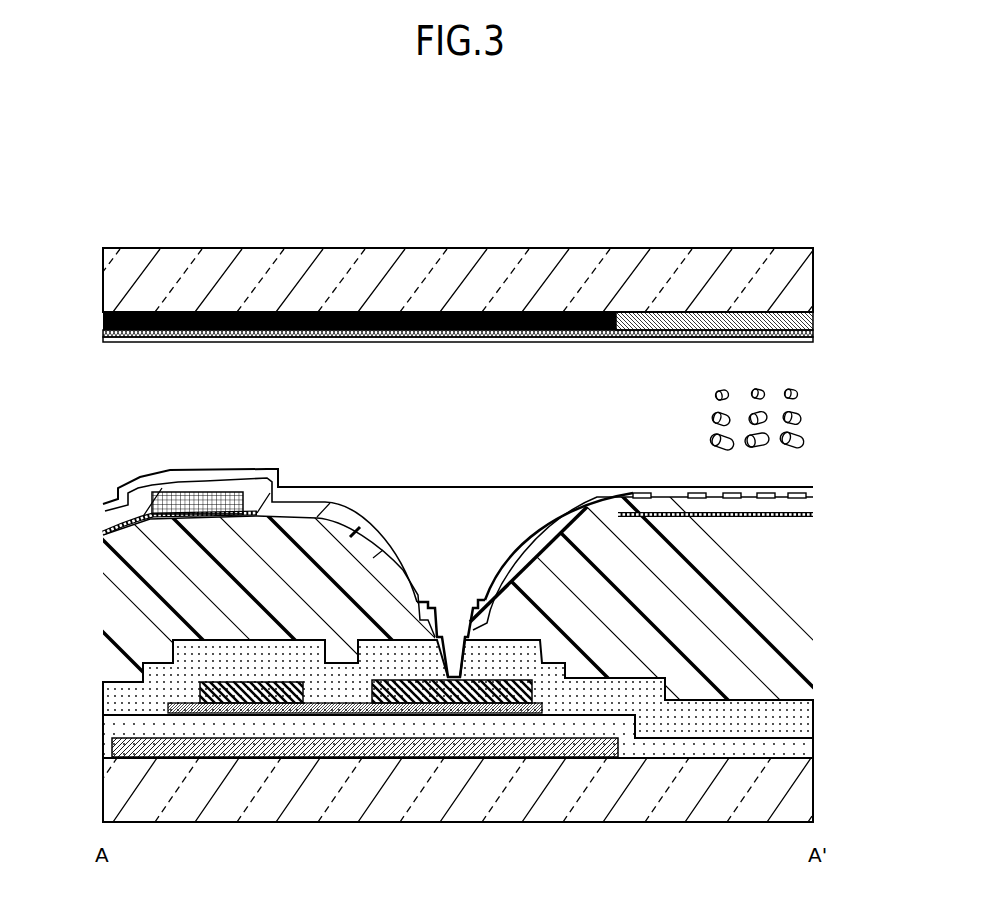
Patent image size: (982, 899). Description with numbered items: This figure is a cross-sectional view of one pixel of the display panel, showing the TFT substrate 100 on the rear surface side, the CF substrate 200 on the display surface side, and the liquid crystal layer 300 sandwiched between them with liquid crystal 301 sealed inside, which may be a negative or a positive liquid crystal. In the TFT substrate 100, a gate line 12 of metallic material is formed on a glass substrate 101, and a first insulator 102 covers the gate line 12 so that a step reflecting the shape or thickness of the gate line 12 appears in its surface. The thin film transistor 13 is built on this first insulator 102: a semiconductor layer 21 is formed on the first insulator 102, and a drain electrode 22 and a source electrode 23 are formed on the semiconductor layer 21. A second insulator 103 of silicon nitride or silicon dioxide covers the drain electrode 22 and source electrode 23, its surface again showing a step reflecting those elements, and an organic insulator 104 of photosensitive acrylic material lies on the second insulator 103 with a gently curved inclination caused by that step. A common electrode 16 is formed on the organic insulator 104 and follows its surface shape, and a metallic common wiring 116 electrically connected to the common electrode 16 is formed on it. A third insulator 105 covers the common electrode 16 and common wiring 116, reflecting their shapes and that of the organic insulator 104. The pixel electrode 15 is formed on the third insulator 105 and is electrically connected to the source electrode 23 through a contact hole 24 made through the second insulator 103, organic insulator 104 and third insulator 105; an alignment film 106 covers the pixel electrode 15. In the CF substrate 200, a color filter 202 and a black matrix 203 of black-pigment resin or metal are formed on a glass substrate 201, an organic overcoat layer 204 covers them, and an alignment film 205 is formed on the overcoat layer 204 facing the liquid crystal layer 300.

The TFT substrate 100 is at (93, 485).
The CF substrate 200 is at (93, 262).
The liquid crystal layer 300 is at (93, 353).
The liquid crystal 301 is at (813, 428).
The glass substrate 201 is at (810, 267).
The color filter 202 is at (673, 318).
The black matrix 203 is at (560, 312).
The overcoat layer 204 is at (812, 328).
The alignment film 205 is at (810, 341).
The glass substrate 101 is at (810, 790).
The first insulator 102 is at (810, 747).
The second insulator 103 is at (810, 717).
The organic insulator 104 is at (810, 643).
The third insulator 105 is at (805, 505).
The alignment film 106 is at (487, 495).
The gate line 12 is at (547, 750).
The thin film transistor 13 is at (439, 770).
The semiconductor layer 21 is at (365, 713).
The drain electrode 22 is at (278, 703).
The source electrode 23 is at (488, 703).
The contact hole 24 is at (437, 620).
The pixel electrode 15 is at (700, 495).
The common electrode 16 is at (262, 500).
The common wiring 116 is at (197, 492).